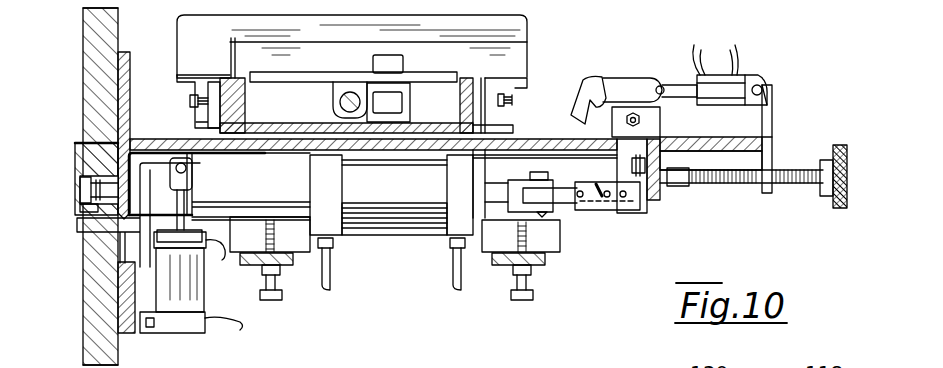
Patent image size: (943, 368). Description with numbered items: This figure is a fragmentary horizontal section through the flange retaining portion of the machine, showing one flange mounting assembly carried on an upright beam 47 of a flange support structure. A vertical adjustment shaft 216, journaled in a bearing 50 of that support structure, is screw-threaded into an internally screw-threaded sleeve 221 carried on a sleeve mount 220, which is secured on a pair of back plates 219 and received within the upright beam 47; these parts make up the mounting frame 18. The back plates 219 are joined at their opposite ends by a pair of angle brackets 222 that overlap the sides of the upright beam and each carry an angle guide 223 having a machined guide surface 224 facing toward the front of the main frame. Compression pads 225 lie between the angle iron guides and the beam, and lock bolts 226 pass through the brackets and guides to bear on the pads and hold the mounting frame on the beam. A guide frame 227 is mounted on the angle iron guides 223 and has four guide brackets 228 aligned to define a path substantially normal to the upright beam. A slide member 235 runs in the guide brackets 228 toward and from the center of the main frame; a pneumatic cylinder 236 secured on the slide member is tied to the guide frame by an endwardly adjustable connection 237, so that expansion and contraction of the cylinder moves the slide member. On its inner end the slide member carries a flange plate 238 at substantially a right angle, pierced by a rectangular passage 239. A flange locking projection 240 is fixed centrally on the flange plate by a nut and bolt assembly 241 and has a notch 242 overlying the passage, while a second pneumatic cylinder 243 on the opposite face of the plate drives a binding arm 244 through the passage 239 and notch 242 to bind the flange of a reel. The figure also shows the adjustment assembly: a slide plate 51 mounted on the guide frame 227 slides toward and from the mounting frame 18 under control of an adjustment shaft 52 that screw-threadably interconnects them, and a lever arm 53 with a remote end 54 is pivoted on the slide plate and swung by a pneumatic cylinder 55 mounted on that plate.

The housing 18 is at (550, 36).
The vertical adjustment shaft 216 is at (384, 56).
The back plates 219 is at (353, 92).
The sleeve mount 220 is at (288, 75).
The internally screw-threaded sleeve 221 is at (338, 103).
The angle brackets 222 is at (171, 72).
The angle guide 223 is at (202, 129).
The guide surfaces 224 is at (192, 146).
The compression pads 225 is at (233, 42).
The lock bolts 226 is at (190, 98).
The guide frame 227 is at (657, 207).
The guide brackets 228 is at (290, 236).
The slide member 235 is at (415, 150).
The pneumatic cylinder 236 is at (377, 221).
The endwardly adjustable connection 237 is at (597, 211).
The flange plate 238 is at (118, 69).
The rectangular passage 239 is at (122, 256).
The flange locking projection 240 is at (77, 153).
The nut and bolt assembly 241 is at (79, 191).
The notch 242 is at (79, 209).
The pneumatic cylinder 243 is at (173, 300).
The binding arm 244 is at (82, 226).
The upright beam 47 is at (246, 167).
The bearing 50 is at (786, 117).
The clamp frame 51 is at (770, 142).
The clamp screw 52 is at (828, 201).
The head 53 is at (642, 83).
The hand 54 is at (582, 110).
The unit 55 is at (718, 80).